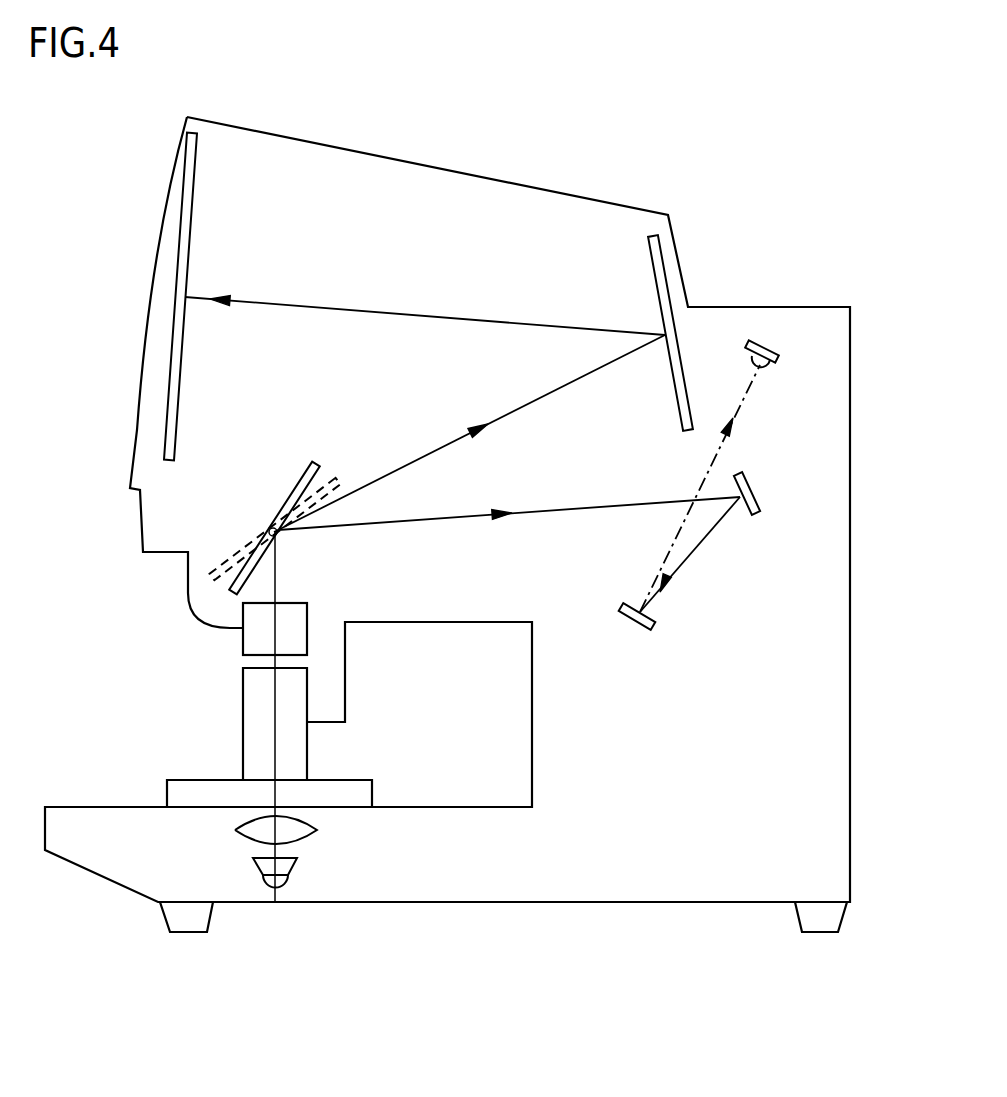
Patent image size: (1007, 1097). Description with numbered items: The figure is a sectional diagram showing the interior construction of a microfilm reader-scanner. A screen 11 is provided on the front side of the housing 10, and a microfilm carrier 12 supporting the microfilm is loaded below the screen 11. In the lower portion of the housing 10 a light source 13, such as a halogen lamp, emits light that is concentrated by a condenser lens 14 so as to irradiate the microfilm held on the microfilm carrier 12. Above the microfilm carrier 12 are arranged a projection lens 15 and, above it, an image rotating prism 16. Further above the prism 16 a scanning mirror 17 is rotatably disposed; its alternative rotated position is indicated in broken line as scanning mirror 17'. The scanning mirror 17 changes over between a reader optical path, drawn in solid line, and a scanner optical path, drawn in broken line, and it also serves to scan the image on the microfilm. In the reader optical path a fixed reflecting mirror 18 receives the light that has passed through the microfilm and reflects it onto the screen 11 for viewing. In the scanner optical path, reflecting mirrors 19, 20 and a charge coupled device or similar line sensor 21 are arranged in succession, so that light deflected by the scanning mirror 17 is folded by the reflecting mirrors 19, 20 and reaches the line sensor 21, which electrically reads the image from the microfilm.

The housing 10 is at (848, 615).
The screen 11 is at (182, 228).
The microfilm carrier 12 is at (167, 795).
The light source 13 is at (275, 902).
The condenser lens 14 is at (318, 825).
The projection lens 15 is at (243, 718).
The image rotating prism 16 is at (243, 633).
The scanning mirror 17 is at (274, 504).
The scanning mirror (rotated position) 17' is at (302, 497).
The reflecting mirror 18 is at (663, 272).
The reflecting mirror 19 is at (742, 474).
The reflecting mirror 20 is at (656, 612).
The line sensor 21 is at (760, 345).